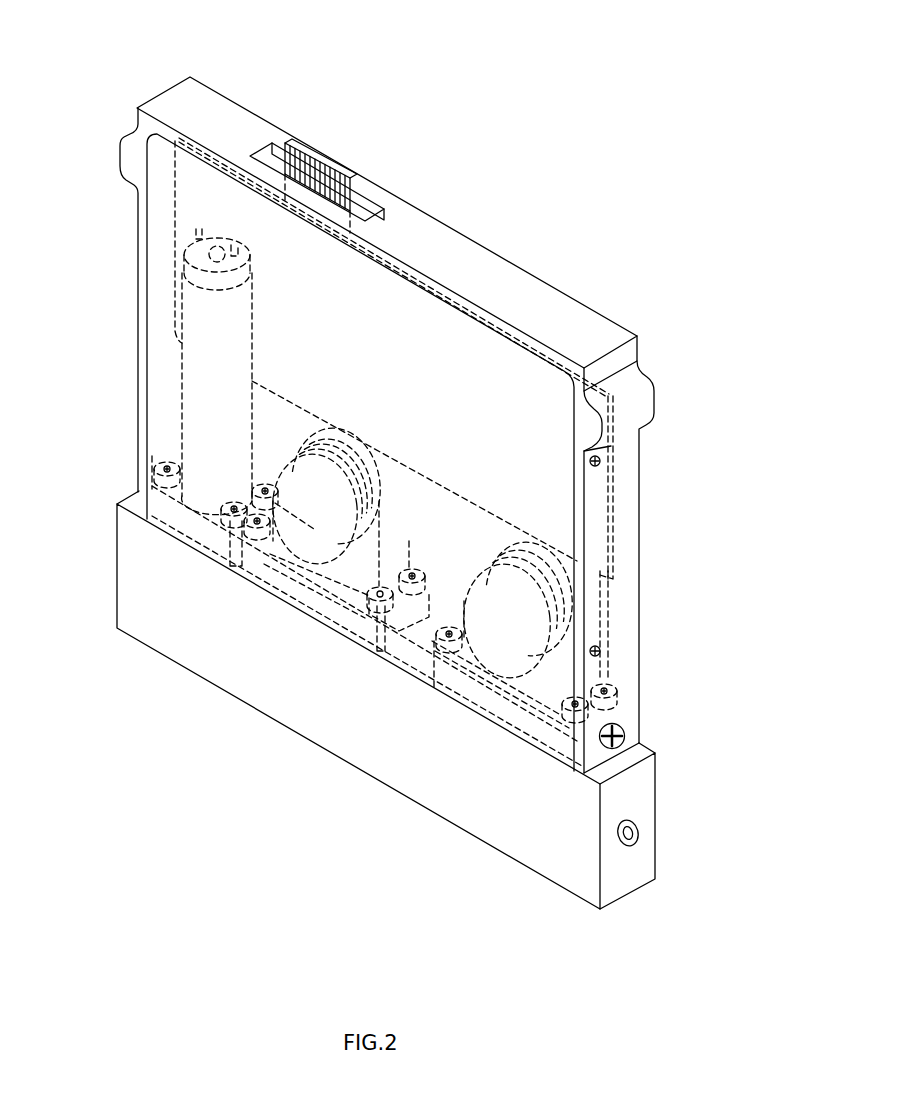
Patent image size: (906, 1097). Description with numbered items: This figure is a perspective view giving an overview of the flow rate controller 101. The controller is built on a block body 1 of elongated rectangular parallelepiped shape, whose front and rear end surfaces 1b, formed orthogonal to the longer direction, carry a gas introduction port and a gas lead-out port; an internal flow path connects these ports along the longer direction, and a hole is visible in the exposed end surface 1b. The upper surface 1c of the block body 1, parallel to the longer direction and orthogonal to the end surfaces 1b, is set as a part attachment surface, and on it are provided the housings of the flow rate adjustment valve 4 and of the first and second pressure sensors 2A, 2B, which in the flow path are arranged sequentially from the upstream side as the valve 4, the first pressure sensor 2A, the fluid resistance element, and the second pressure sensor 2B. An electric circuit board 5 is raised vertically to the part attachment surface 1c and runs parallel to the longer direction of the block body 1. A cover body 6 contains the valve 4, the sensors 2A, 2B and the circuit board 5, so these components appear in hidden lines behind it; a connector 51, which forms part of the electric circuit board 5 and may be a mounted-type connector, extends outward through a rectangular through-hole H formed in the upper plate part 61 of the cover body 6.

The block body 1 is at (233, 657).
The end surface 1b is at (643, 823).
The upper surface 1c is at (378, 658).
The first pressure sensor 2A is at (337, 417).
The second pressure sensor 2B is at (533, 527).
The flow rate adjustment valve 4 is at (182, 361).
The electric circuit board 5 is at (612, 497).
The cover body 6 is at (139, 96).
The upper plate part 61 is at (197, 103).
The connector 51 is at (322, 150).
The through-hole H is at (375, 205).
The flow rate controller 101 is at (491, 122).